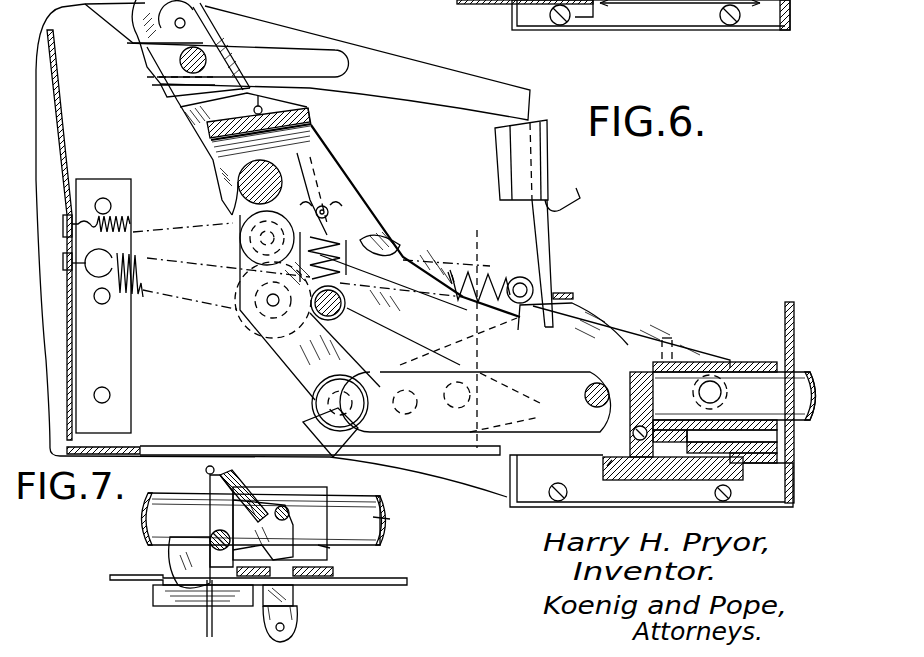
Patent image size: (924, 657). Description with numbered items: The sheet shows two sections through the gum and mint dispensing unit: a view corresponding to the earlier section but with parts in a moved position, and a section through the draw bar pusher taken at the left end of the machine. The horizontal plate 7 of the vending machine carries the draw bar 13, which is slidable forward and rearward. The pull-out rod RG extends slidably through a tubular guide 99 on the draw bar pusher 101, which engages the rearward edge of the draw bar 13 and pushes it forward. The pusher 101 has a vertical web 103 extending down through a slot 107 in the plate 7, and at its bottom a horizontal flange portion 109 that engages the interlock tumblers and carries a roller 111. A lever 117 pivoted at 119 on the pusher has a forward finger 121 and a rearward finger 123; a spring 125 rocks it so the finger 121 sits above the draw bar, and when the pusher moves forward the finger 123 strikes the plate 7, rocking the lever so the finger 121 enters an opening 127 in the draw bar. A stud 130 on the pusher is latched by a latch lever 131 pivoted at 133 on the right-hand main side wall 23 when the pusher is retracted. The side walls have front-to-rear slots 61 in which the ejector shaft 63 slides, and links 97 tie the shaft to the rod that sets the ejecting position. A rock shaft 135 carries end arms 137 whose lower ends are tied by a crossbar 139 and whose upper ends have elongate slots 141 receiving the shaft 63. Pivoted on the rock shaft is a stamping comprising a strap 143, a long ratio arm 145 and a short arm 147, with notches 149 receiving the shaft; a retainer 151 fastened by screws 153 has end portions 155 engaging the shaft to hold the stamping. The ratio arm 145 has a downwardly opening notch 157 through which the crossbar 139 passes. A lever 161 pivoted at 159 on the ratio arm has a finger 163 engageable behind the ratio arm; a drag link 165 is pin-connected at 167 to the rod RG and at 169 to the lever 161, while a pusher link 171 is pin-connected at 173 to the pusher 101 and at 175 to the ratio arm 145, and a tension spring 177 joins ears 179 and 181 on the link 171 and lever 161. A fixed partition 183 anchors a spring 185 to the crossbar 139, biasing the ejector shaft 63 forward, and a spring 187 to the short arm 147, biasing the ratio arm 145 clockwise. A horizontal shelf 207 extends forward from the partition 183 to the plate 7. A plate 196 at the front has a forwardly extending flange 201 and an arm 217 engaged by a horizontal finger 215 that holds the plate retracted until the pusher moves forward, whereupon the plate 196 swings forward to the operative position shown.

In FIG. 6, the horizontal plate 7 is at (651, 481).
In FIG. 7, the horizontal plate 7 is at (389, 598).
In FIG. 6, the draw bar 13 is at (723, 402).
In FIG. 7, the draw bar 13 is at (258, 586).
In FIG. 6, the right-hand main side wall 23 is at (555, 263).
In FIG. 6, the front-to-rear slots 61 is at (328, 63).
In FIG. 6, the ejector shaft 63 is at (222, 60).
In FIG. 6, the links 97 is at (181, 48).
In FIG. 6, the tubular guide 99 is at (715, 352).
In FIG. 7, the tubular guide 99 is at (293, 515).
In FIG. 6, the draw bar pusher 101 is at (509, 239).
In FIG. 7, the draw bar pusher 101 is at (173, 562).
In FIG. 6, the vertical web 103 is at (672, 479).
In FIG. 6, the slot 107 is at (729, 472).
In FIG. 7, the slot 107 is at (126, 593).
In FIG. 6, the horizontal flange portion 109 is at (623, 249).
In FIG. 7, the horizontal flange portion 109 is at (203, 607).
In FIG. 7, the roller 111 is at (299, 624).
In FIG. 7, the lever 117 is at (264, 556).
In FIG. 7, the pivot 119 is at (198, 530).
In FIG. 7, the forward finger 121 is at (336, 553).
In FIG. 7, the rearward finger 123 is at (201, 567).
In FIG. 7, the spring 125 is at (243, 493).
In FIG. 7, the opening 127 is at (290, 596).
In FIG. 6, the stud 130 is at (726, 392).
In FIG. 6, the latch lever 131 is at (631, 333).
In FIG. 6, the pivot 133 is at (393, 310).
In FIG. 6, the rock shaft 135 is at (229, 187).
In FIG. 6, the end arms 137 is at (227, 131).
In FIG. 6, the crossbar 139 is at (353, 303).
In FIG. 6, the elongate slots 141 is at (203, 14).
In FIG. 6, the strap 143 is at (280, 119).
In FIG. 6, the ratio arm 145 is at (415, 300).
In FIG. 6, the short arm 147 is at (183, 218).
In FIG. 6, the notches 149 is at (326, 186).
In FIG. 6, the retainer 151 is at (283, 137).
In FIG. 6, the screws 153 is at (234, 108).
In FIG. 6, the end portions 155 is at (204, 173).
In FIG. 6, the notch 157 is at (386, 235).
In FIG. 6, the pivot 159 is at (245, 238).
In FIG. 6, the lever 161 is at (310, 307).
In FIG. 6, the finger 163 is at (315, 432).
In FIG. 6, the drag link 165 is at (475, 339).
In FIG. 6, the pin connection 167 is at (609, 374).
In FIG. 6, the pin connection 169 is at (320, 403).
In FIG. 6, the pusher link 171 is at (573, 324).
In FIG. 6, the pin connection 173 is at (632, 414).
In FIG. 6, the pin connection 175 is at (256, 300).
In FIG. 6, the tension spring 177 is at (479, 269).
In FIG. 6, the ear 179 is at (547, 282).
In FIG. 6, the ear 181 is at (329, 242).
In FIG. 6, the partition 183 is at (271, 250).
In FIG. 6, the spring 185 is at (191, 283).
In FIG. 6, the spring 187 is at (117, 210).
In FIG. 6, the plate 196 is at (537, 160).
In FIG. 6, the forwardly extending flange 201 is at (575, 187).
In FIG. 6, the horizontal shelf 207 is at (283, 435).
In FIG. 6, the horizontal finger 215 is at (583, 294).
In FIG. 6, the arm 217 is at (567, 263).
In FIG. 6, the pull-out rod RG is at (734, 396).
In FIG. 7, the pull-out rod RG is at (276, 519).